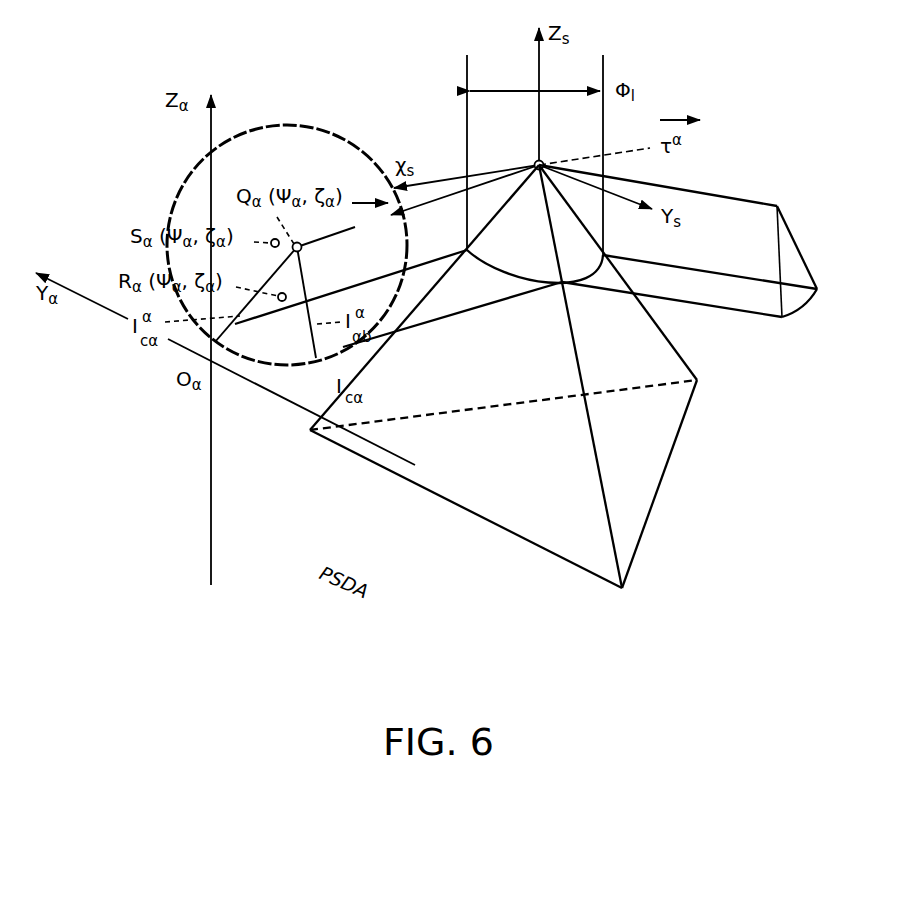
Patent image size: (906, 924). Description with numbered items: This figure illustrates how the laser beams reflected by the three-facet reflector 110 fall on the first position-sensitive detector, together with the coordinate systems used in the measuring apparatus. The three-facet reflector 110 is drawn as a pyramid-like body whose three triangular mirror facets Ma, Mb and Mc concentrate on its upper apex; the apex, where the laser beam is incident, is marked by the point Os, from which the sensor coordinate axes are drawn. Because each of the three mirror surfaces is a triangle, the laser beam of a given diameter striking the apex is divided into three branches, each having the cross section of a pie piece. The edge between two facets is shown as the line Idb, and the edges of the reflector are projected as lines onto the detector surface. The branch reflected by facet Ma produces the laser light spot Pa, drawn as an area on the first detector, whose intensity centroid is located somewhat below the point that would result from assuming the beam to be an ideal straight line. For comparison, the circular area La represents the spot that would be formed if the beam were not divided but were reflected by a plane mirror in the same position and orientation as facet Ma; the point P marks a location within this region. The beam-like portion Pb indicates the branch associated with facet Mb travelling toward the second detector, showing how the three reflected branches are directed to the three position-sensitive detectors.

The three-facet reflector 110 is at (530, 541).
The sensor origin point Os is at (524, 157).
The mirror facet Ma is at (466, 509).
The mirror facet Mb is at (659, 484).
The mirror facet Mc is at (503, 396).
The intersection line Idb is at (584, 376).
The laser light spot Pa is at (268, 347).
The plane / prism P b Pb is at (793, 267).
The laser light spot area La is at (272, 124).
The point P is at (294, 285).